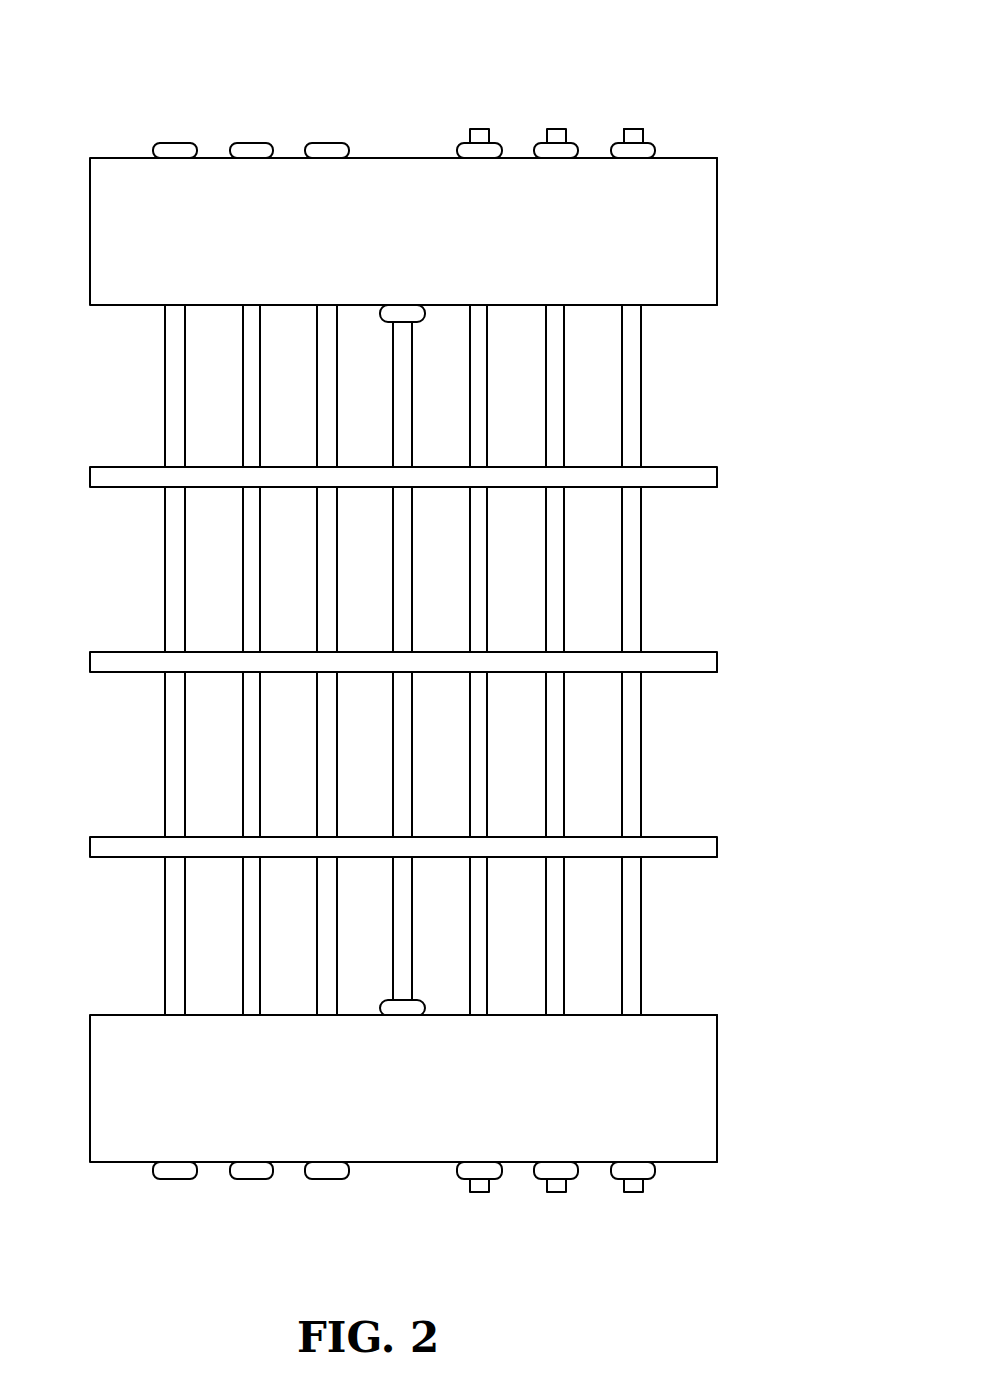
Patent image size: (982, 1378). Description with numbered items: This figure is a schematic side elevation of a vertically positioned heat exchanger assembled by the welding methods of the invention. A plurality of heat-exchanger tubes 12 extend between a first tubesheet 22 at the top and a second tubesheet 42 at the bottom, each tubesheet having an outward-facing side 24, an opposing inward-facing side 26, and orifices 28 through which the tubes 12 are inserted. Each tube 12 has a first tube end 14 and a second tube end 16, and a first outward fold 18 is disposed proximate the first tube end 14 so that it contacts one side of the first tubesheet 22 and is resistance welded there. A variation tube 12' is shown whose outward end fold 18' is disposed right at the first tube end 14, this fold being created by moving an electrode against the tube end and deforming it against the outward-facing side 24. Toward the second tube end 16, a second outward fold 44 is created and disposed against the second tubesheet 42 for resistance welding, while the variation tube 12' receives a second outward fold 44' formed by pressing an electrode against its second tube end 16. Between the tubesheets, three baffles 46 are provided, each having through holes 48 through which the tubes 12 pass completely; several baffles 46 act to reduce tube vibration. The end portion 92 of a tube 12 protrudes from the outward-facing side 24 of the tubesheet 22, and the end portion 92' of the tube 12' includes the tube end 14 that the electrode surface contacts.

The heat-exchanger tube 12 is at (511, 660).
The heat-exchanger tube 12' is at (108, 660).
The first tube end 14 is at (190, 143).
The second tube end 16 is at (172, 1180).
The first outward fold 18 is at (681, 124).
The outward end fold 18' is at (126, 126).
The first tubesheet 22 is at (725, 247).
The outward-facing side 24 is at (695, 158).
The inward-facing side 26 is at (693, 305).
The orifice 28 is at (163, 307).
The second tubesheet 42 is at (722, 1103).
The second outward fold 44 is at (679, 1196).
The second outward fold 44' is at (131, 1199).
The baffle 46 is at (723, 470).
The through hole 48 is at (643, 488).
The end portion 92 is at (657, 69).
The end portion 92' is at (154, 76).